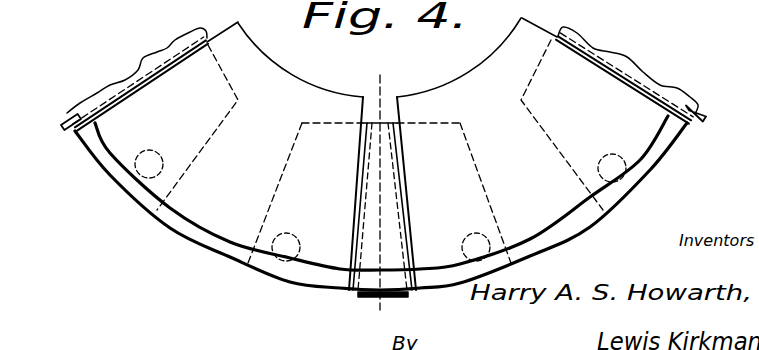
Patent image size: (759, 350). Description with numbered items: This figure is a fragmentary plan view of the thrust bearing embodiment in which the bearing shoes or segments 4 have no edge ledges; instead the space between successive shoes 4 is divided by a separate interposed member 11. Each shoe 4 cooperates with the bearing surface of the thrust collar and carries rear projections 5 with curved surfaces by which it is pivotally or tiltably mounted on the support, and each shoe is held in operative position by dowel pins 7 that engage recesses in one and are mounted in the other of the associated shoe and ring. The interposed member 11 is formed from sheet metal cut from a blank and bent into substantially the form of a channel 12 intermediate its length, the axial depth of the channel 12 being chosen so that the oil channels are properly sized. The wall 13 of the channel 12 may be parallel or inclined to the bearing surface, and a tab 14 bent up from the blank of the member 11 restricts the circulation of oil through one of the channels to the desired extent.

The bearing shoes or segments 4 is at (282, 89).
The rear projections 5 is at (386, 84).
The dowel pins 7 is at (151, 151).
The interposed member 11 is at (296, 165).
The channel 12 is at (123, 92).
The wall of the channel 13 is at (139, 75).
The tab 14 is at (70, 124).